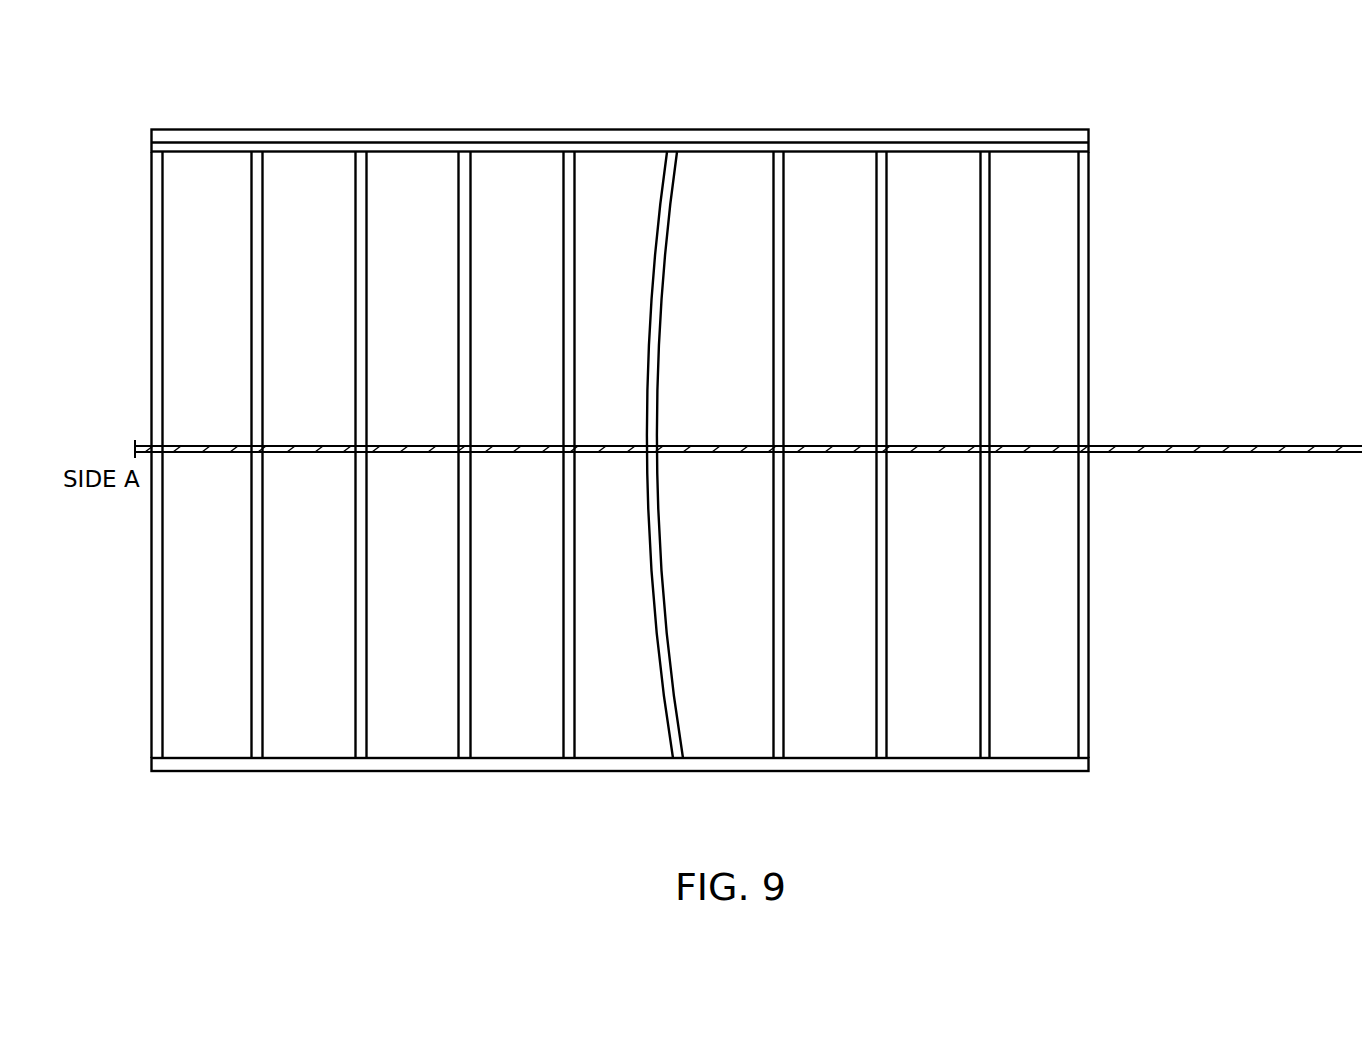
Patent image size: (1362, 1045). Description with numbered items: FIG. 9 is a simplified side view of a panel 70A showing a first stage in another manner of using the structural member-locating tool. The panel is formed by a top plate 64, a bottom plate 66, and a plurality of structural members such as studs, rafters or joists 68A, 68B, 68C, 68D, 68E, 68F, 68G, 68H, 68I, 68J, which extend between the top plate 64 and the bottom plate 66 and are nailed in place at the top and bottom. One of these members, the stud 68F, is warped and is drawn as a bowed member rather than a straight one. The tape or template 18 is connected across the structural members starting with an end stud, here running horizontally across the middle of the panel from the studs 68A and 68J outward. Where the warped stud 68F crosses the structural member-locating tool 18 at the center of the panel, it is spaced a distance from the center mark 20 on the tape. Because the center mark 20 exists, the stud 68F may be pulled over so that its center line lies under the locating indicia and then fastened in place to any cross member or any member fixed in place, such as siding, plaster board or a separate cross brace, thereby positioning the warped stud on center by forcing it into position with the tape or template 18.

The tape or template 18 is at (1168, 446).
The center mark 20 is at (684, 442).
The top plate 64 is at (550, 129).
The bottom plate 66 is at (567, 771).
The wall frame assembly 70A is at (653, 446).
The stud 68A is at (160, 640).
The stud 68B is at (257, 580).
The stud 68C is at (361, 580).
The stud 68D is at (466, 586).
The stud 68E is at (570, 586).
The warped stud 68F is at (663, 637).
The stud 68G is at (778, 640).
The stud 68H is at (879, 202).
The stud 68I is at (985, 242).
The stud 68J is at (1083, 238).